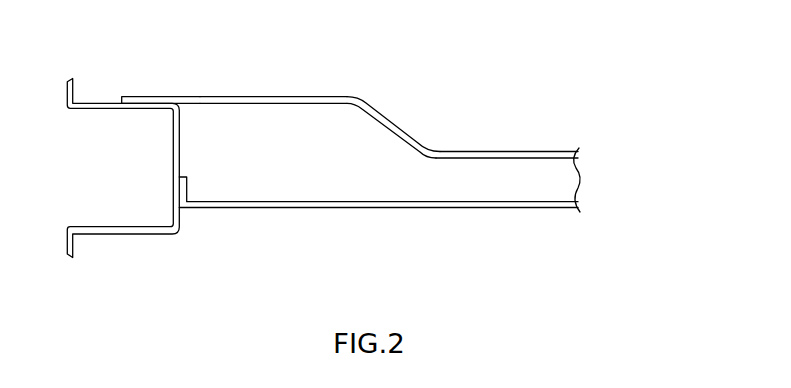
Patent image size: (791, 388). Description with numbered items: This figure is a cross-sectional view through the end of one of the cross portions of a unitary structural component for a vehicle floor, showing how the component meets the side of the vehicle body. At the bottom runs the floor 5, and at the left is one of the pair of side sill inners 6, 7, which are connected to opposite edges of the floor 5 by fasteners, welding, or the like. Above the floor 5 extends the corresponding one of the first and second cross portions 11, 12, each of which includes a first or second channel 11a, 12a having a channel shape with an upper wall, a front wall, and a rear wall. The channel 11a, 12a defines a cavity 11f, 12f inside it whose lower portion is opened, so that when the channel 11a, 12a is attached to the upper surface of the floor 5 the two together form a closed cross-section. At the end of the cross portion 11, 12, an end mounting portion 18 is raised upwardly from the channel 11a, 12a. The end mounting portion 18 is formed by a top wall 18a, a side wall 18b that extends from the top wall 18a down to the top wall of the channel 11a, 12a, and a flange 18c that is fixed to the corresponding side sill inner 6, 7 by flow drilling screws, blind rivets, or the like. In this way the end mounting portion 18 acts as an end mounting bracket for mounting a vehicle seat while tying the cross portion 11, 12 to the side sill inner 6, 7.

The floor 5 is at (385, 206).
The side sill inner 6 is at (107, 168).
The side sill inner 7 is at (121, 160).
The first cross portion 11 is at (560, 145).
The second cross portion 12 is at (560, 145).
The first channel 11a is at (536, 135).
The second channel 12a is at (531, 151).
The cavity 11f is at (626, 180).
The cavity 12f is at (568, 176).
The end mounting portion 18 is at (287, 99).
The top wall 18a is at (290, 96).
The side wall 18b is at (398, 129).
The flange 18c is at (140, 96).